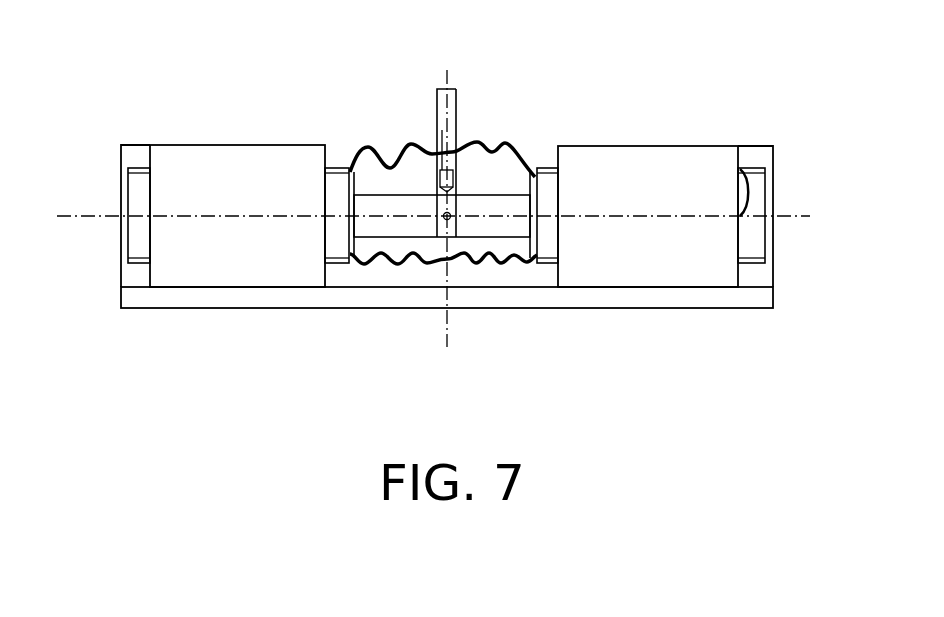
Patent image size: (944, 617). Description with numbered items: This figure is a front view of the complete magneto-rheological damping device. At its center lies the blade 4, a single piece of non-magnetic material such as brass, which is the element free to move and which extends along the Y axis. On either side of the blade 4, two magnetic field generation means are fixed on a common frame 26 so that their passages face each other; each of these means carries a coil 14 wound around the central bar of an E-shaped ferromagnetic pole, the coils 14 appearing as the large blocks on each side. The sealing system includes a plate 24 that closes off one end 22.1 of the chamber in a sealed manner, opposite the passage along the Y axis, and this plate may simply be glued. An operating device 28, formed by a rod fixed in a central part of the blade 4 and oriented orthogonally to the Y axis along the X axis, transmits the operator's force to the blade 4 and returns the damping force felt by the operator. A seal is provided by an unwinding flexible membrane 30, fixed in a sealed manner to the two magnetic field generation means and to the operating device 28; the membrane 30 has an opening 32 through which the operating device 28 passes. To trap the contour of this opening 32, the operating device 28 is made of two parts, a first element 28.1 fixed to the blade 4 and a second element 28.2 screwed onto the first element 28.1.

The blade 4 is at (488, 228).
The coil 14 is at (335, 186).
The end of the chamber 22.1 is at (741, 163).
The plate 24 is at (137, 162).
The frame 26 is at (353, 302).
The operating device 28 is at (431, 112).
The first element 28.1 is at (465, 101).
The second element 28.2 is at (445, 168).
The unwinding flexible membrane 30 is at (412, 148).
The opening 32 is at (440, 147).
The X axis X is at (448, 78).
The Y axis Y is at (75, 217).